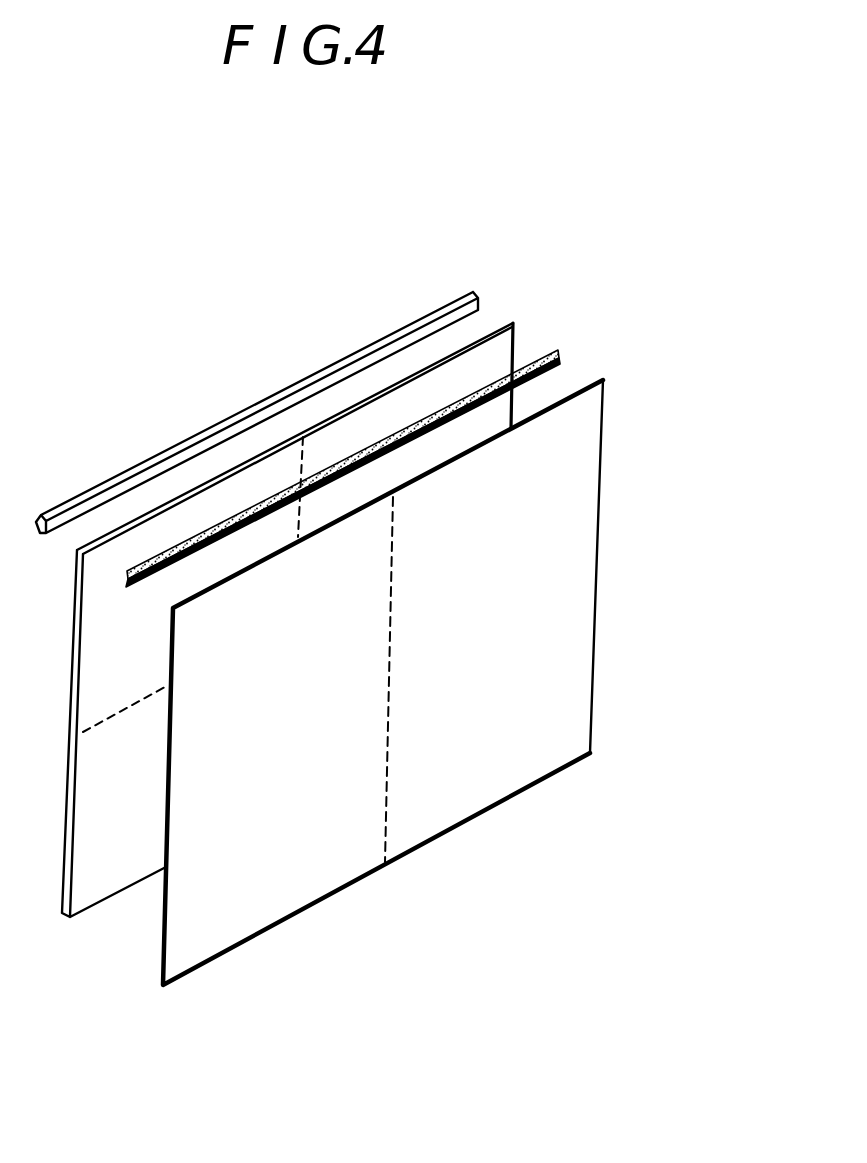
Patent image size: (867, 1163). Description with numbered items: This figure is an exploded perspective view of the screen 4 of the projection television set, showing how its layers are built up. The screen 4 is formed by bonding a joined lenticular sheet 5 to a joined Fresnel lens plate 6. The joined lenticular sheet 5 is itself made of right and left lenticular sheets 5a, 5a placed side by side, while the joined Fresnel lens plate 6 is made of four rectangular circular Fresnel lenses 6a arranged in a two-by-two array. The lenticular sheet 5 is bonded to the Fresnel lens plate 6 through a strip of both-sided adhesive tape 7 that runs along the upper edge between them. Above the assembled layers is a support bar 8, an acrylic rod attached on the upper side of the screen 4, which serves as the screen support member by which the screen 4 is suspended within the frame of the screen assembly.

The screen 4 is at (600, 258).
The joined lenticular sheet 5 is at (593, 417).
The lenticular sheet 5a is at (285, 903).
The joined Fresnel lens plate 6 is at (514, 332).
The rectangular circular Fresnel lens 6a is at (382, 413).
The both-sided adhesive tape 7 is at (558, 356).
The support bar 8 is at (473, 297).